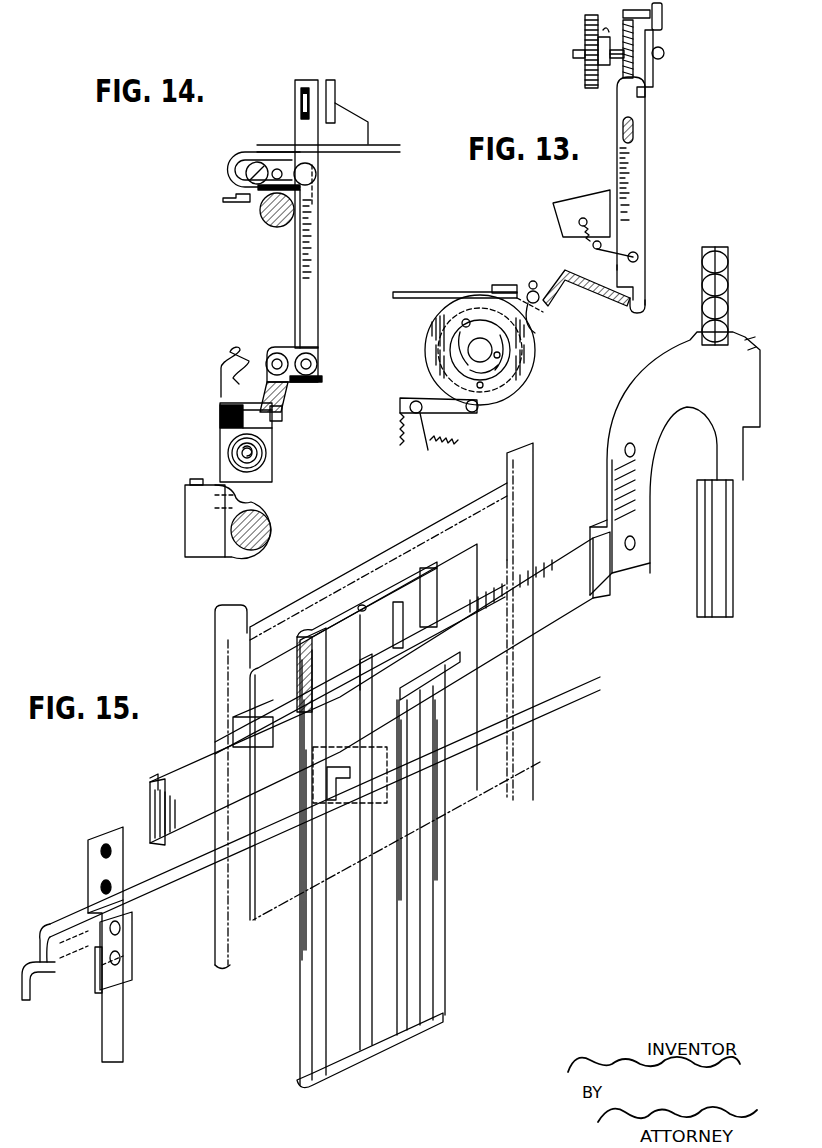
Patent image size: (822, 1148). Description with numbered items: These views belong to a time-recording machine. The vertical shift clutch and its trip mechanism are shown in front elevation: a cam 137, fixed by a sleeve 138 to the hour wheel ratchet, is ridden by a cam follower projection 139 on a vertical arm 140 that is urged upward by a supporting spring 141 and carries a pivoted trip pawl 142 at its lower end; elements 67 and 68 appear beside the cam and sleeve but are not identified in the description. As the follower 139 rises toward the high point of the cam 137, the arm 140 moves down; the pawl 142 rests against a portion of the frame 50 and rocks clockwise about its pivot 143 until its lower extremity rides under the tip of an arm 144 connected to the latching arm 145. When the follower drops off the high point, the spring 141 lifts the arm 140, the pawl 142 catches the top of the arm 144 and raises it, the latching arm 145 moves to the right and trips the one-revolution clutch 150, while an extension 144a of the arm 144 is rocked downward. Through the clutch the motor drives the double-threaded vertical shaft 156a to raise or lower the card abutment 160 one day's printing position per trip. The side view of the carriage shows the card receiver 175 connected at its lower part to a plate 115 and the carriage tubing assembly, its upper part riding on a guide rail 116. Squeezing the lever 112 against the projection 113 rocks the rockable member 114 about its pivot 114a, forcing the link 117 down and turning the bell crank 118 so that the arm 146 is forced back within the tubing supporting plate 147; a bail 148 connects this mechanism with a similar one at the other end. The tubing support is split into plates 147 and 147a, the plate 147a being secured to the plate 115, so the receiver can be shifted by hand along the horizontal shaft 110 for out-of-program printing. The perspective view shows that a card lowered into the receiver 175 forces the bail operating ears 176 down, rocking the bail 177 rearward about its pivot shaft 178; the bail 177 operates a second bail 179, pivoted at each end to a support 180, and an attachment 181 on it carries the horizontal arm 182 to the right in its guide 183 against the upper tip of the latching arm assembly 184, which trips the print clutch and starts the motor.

In FIG. 13, the frame 50 is at (563, 221).
In FIG. 13, the gear 67 is at (585, 40).
In FIG. 13, the gear shaft 68 is at (619, 62).
In FIG. 14, the horizontal shaft 110 is at (263, 520).
In FIG. 14, the lever 112 is at (305, 88).
In FIG. 14, the projection 113 is at (331, 90).
In FIG. 14, the rockable member 114 is at (276, 170).
In FIG. 14, the pivot 114a is at (248, 170).
In FIG. 14, the plate 115 is at (226, 462).
In FIG. 14, the guide rail 116 is at (262, 216).
In FIG. 14, the link 117 is at (311, 276).
In FIG. 14, the bell crank 118 is at (283, 413).
In FIG. 13, the cam 137 is at (654, 72).
In FIG. 13, the sleeve 138 is at (662, 52).
In FIG. 13, the cam follower projection 139 is at (645, 93).
In FIG. 13, the vertical arm 140 is at (633, 203).
In FIG. 13, the supporting spring 141 is at (625, 28).
In FIG. 13, the trip pawl 142 is at (637, 284).
In FIG. 13, the pivot 143 is at (593, 245).
In FIG. 13, the arm 144 is at (600, 283).
In FIG. 13, the extension 144a is at (413, 292).
In FIG. 13, the latching arm 145 is at (525, 331).
In FIG. 13, the arm 146 is at (447, 355).
In FIG. 14, the carriage tubing supporting plate 147 is at (272, 440).
In FIG. 14, the support plate 147a is at (227, 448).
In FIG. 14, the bail 148 is at (224, 200).
In FIG. 13, the clutch 150 is at (424, 326).
In FIG. 13, the vertical shaft 156a is at (712, 582).
In FIG. 15, the abutment 160 is at (576, 562).
In FIG. 14, the card receiver 175 is at (302, 278).
In FIG. 15, the card receiver 175 is at (250, 659).
In FIG. 15, the bail operating ears 176 is at (433, 606).
In FIG. 15, the bail 177 is at (163, 800).
In FIG. 15, the pivot shaft 178 is at (151, 782).
In FIG. 15, the bail 179 is at (382, 898).
In FIG. 15, the support 180 is at (347, 622).
In FIG. 15, the attachment 181 is at (350, 802).
In FIG. 15, the horizontal arm 182 is at (176, 886).
In FIG. 15, the guide 183 is at (120, 943).
In FIG. 15, the latching arm assembly 184 is at (43, 983).